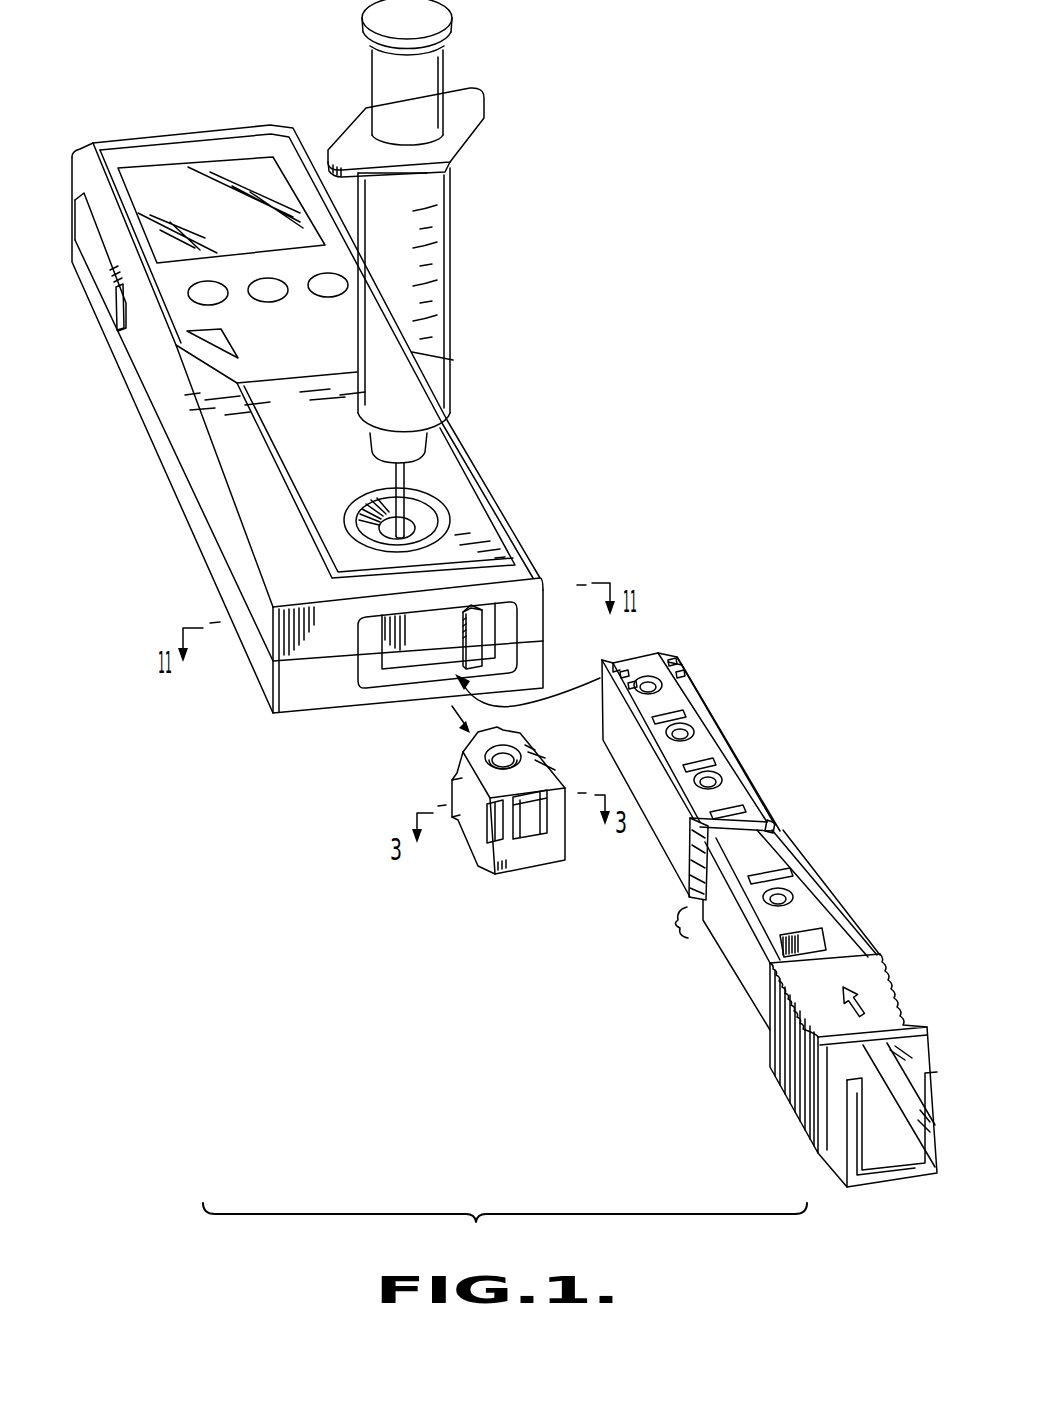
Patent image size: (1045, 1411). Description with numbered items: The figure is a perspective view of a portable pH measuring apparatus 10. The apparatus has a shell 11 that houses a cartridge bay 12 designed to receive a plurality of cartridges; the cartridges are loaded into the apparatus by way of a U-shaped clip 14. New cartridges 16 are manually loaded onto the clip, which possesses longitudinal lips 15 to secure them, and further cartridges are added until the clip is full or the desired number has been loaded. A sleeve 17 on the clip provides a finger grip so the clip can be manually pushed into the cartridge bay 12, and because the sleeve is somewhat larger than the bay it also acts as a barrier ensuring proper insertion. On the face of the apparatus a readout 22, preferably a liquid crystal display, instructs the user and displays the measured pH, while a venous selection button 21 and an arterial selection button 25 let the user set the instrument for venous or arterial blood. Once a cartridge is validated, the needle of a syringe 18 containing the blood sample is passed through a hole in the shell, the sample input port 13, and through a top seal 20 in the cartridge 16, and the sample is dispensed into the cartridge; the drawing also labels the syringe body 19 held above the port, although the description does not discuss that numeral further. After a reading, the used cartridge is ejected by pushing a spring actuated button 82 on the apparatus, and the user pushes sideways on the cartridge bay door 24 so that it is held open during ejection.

The portable pH measuring apparatus 10 is at (138, 509).
The shell 11 is at (467, 439).
The cartridge bay 12 is at (428, 652).
The sample input port 13 is at (427, 510).
The U-shaped clip 14 is at (832, 838).
The longitudinal lips 15 is at (930, 1068).
The cartridge 16 is at (470, 876).
The sleeve 17 is at (892, 970).
The syringe 18 is at (395, 468).
The syringe 19 is at (450, 313).
The top seal 20 is at (519, 753).
The venous selection button 21 is at (331, 293).
The readout 22 is at (226, 165).
The cartridge bay door 24 is at (482, 630).
The arterial selection button 25 is at (270, 295).
The spring actuated button 82 is at (112, 306).